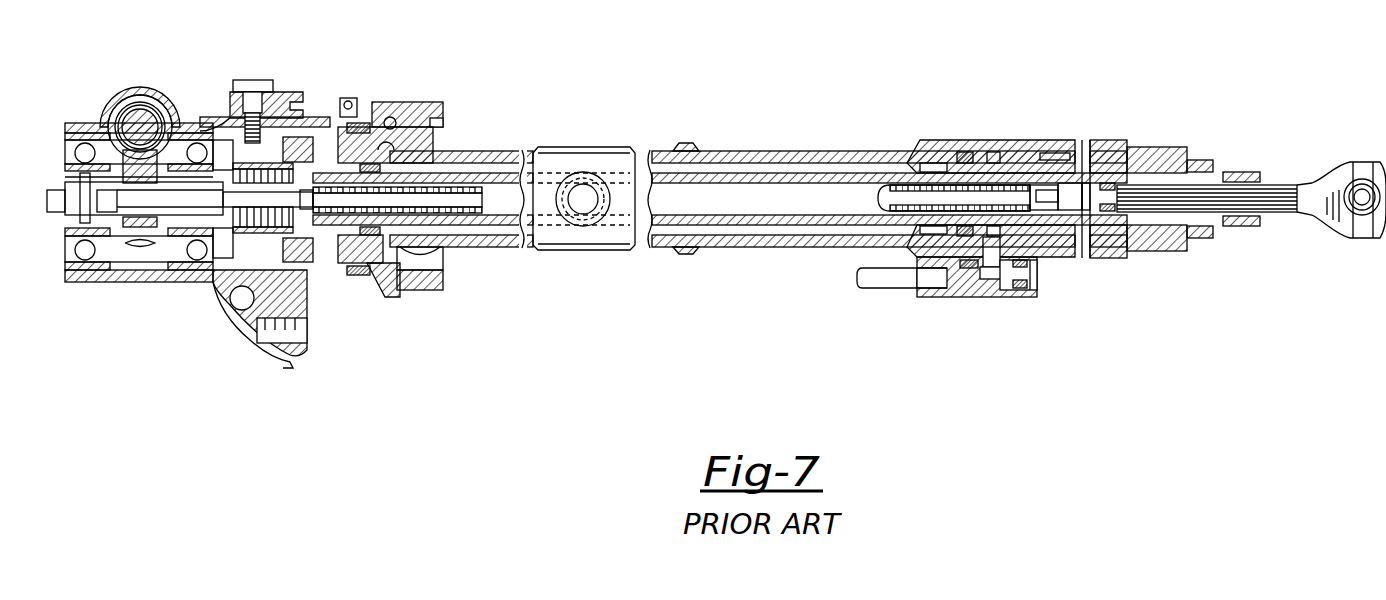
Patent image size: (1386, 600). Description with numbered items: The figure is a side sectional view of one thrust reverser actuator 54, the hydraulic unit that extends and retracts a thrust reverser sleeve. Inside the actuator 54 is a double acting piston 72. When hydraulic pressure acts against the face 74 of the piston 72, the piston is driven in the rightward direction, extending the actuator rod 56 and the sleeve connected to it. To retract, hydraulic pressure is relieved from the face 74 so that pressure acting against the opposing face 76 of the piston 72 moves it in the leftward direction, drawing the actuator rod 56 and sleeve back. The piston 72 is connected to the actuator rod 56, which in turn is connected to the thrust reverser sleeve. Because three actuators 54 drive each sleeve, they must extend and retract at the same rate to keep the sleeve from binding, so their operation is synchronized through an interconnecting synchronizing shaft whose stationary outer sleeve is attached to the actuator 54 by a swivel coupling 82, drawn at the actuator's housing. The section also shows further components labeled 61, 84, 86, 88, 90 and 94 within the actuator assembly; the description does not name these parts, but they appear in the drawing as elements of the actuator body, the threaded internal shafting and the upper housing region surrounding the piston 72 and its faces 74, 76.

The actuator 54 is at (688, 128).
The actuator rod 56 is at (1275, 190).
The block 61 is at (602, 238).
The double acting piston 72 is at (388, 240).
The piston face 74 is at (320, 248).
The opposing piston face 76 is at (400, 224).
The swivel coupling 82 is at (1083, 190).
The pin 84 is at (393, 180).
The threaded shaft 86 is at (440, 190).
The rod 88 is at (1153, 200).
The worm housing 90 is at (143, 112).
The screw 94 is at (185, 125).